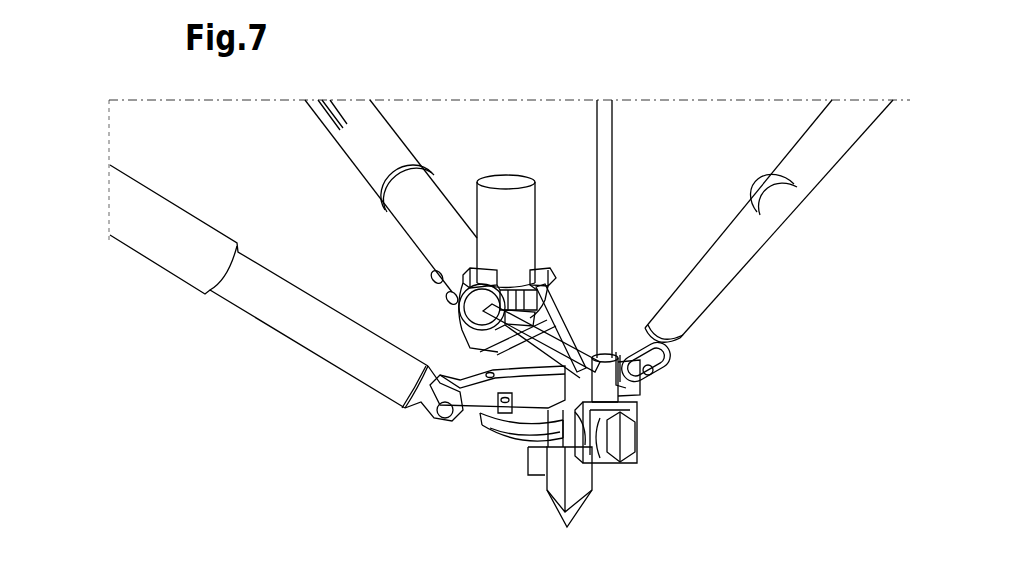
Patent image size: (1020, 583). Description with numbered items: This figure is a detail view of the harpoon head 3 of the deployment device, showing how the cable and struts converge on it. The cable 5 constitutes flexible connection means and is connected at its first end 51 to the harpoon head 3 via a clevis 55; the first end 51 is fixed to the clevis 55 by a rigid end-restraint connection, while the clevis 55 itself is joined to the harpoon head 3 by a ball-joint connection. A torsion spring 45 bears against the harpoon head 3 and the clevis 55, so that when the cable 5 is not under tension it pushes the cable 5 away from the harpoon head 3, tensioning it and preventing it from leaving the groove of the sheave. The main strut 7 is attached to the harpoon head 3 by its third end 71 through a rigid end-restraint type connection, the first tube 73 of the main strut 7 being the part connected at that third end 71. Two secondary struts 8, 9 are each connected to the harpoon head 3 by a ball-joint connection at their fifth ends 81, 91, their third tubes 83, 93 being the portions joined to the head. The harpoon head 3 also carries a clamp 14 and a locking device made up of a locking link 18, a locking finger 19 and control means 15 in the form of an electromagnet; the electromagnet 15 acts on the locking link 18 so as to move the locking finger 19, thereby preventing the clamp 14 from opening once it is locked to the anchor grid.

The harpoon head 3 is at (497, 437).
The cable 5 is at (607, 198).
The main strut 7 is at (364, 217).
The secondary strut 8 is at (274, 356).
The secondary strut 9 is at (776, 258).
The clamp 14 is at (585, 497).
The control means 15 is at (524, 205).
The locking link 18 is at (556, 328).
The locking finger 19 is at (580, 342).
The torsion spring 45 is at (582, 473).
The first end 51 is at (568, 312).
The clevis 55 is at (633, 408).
The third end 71 is at (442, 330).
The first tube 73 is at (420, 233).
The fifth end 81 is at (430, 414).
The third tube 83 is at (362, 368).
The fifth end 91 is at (680, 356).
The third tube 93 is at (722, 250).